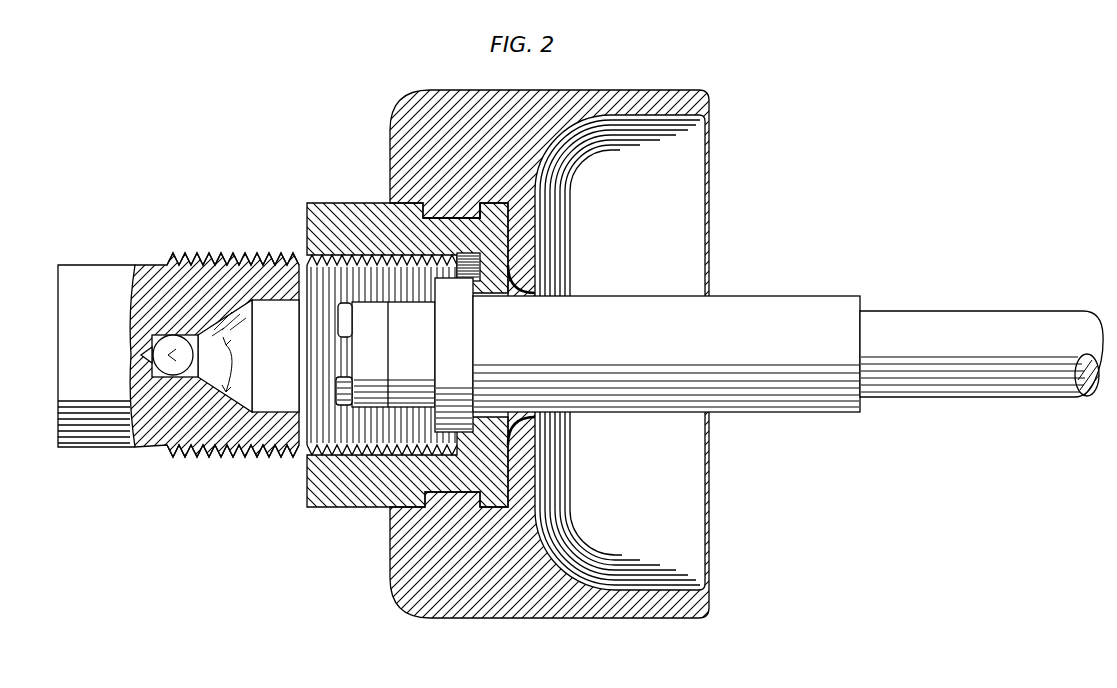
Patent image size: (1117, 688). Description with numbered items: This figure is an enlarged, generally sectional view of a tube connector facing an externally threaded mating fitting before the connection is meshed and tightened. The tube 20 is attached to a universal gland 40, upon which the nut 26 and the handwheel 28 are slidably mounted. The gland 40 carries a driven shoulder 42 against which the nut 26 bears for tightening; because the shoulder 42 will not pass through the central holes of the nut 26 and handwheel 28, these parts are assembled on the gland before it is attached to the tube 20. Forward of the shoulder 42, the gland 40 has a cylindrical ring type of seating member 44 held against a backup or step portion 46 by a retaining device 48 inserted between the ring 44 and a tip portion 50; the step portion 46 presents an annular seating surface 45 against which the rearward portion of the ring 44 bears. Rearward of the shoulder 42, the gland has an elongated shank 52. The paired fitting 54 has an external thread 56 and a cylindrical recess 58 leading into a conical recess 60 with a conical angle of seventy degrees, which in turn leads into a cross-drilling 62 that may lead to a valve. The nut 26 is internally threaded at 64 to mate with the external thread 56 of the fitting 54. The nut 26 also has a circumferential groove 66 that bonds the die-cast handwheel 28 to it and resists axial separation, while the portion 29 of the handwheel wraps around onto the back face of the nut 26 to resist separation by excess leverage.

The tube 20 is at (986, 320).
The nut 26 is at (407, 312).
The handwheel 28 is at (612, 94).
The portion of the handwheel 29 is at (540, 246).
The universal gland 40 is at (666, 344).
The driven shoulder 42 is at (468, 327).
The seating member 44 is at (371, 392).
The annular seating surface 45 is at (386, 337).
The step portion 46 is at (410, 312).
The retaining device 48 is at (348, 318).
The tip portion 50 is at (344, 387).
The shank 52 is at (637, 402).
The paired fitting 54 is at (195, 270).
The external thread 56 is at (246, 262).
The cylindrical recess 58 is at (292, 374).
The conical recess 60 is at (241, 403).
The cross-drilling 62 is at (174, 373).
The internal thread 64 is at (372, 256).
The circumferential groove 66 is at (453, 217).